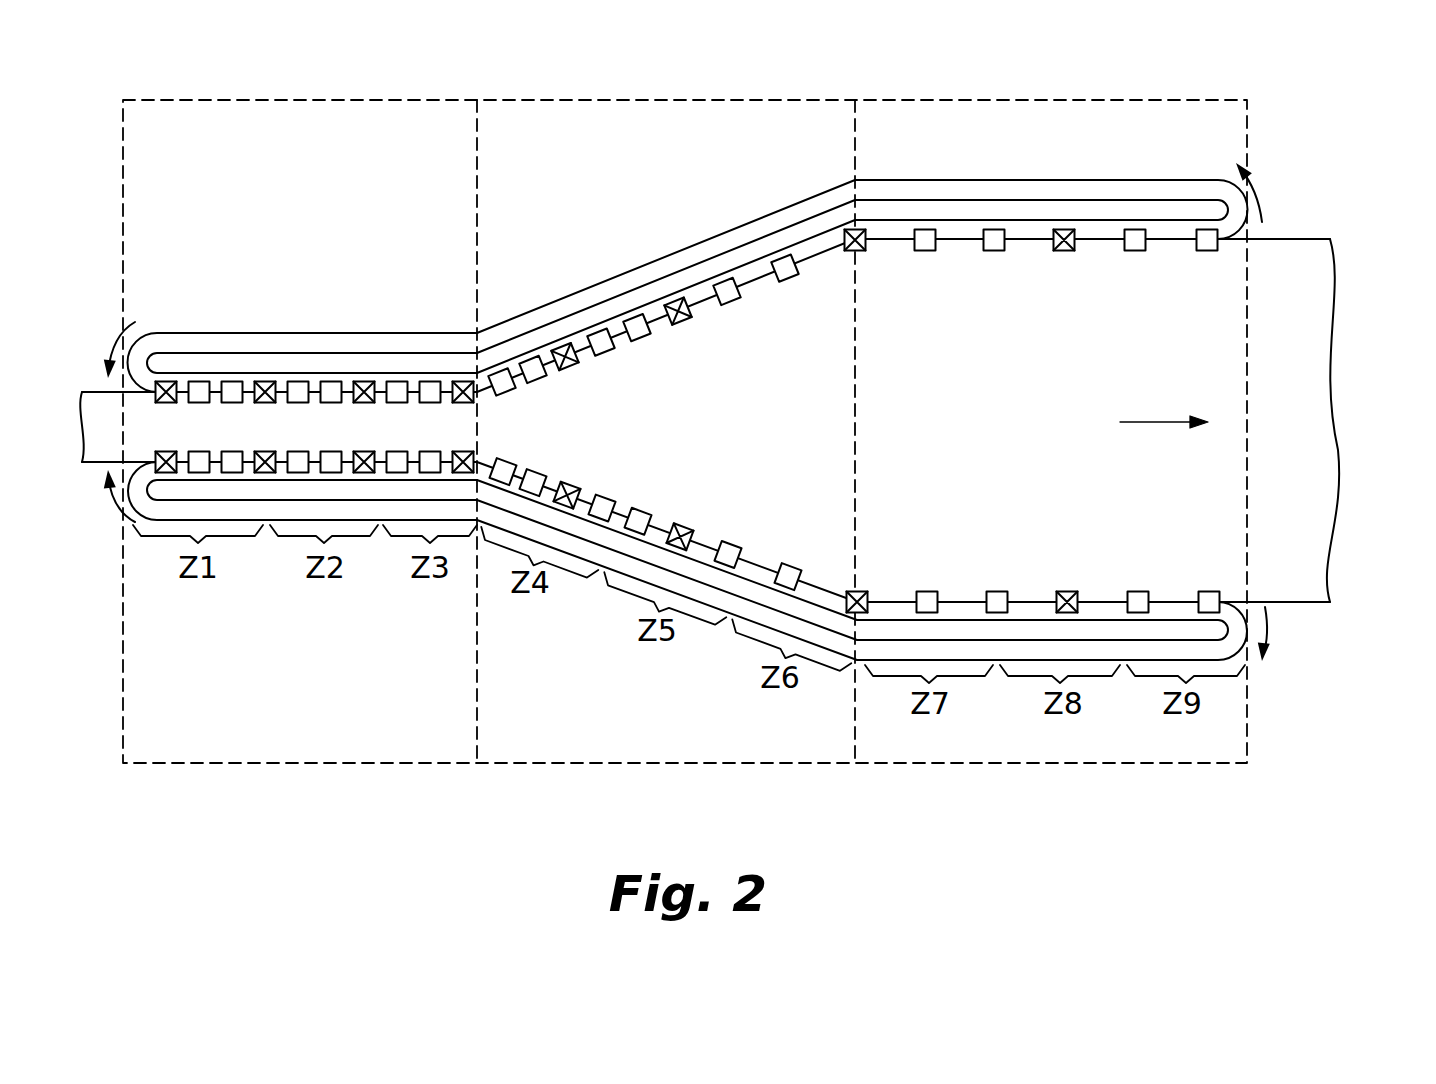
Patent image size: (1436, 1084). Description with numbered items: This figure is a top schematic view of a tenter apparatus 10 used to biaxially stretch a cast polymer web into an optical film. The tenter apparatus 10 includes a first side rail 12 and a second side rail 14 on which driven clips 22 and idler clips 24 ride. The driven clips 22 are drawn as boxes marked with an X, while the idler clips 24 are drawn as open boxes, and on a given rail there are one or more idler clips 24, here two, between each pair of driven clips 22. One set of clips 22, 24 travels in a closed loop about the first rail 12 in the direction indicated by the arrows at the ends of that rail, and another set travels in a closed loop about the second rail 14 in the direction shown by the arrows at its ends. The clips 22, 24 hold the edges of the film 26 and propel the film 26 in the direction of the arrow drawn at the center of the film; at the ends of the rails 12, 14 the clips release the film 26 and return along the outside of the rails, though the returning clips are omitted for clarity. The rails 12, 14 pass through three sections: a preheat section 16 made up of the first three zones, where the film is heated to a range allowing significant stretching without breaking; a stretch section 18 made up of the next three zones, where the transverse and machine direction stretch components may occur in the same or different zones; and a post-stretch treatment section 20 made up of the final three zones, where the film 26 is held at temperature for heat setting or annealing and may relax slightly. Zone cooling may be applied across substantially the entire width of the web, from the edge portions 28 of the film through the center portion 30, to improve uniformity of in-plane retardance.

The tenter apparatus 10 is at (165, 207).
The first side rail 12 is at (762, 247).
The second side rail 14 is at (1100, 628).
The preheat section 16 is at (270, 763).
The stretch section 18 is at (624, 763).
The post-stretch treatment section 20 is at (1022, 763).
The driven clips 22 is at (560, 348).
The idler clips 24 is at (632, 315).
The film 26 is at (1343, 297).
The edge portions 28 is at (842, 262).
The center portion 30 is at (882, 392).